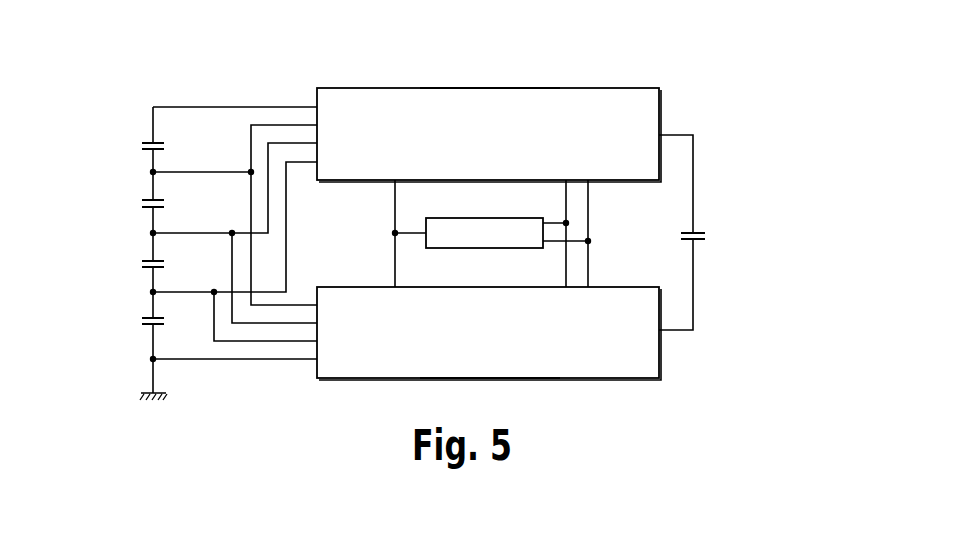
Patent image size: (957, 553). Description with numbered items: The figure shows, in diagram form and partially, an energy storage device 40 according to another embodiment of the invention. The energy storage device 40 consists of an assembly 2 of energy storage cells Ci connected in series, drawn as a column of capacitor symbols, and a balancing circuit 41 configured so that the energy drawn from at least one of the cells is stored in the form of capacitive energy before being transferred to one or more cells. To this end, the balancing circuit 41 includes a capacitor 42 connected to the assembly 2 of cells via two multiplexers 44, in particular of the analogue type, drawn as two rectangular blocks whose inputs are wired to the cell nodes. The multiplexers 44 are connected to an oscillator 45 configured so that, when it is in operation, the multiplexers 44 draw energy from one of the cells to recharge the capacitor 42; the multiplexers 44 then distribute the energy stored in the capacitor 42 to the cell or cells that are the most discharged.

The assembly of energy storage cells 2 is at (163, 97).
The energy storage device 40 is at (487, 79).
The balancing circuit 41 is at (272, 373).
The capacitor 42 is at (697, 231).
The multiplexers 44 is at (588, 88).
The oscillator 45 is at (478, 249).